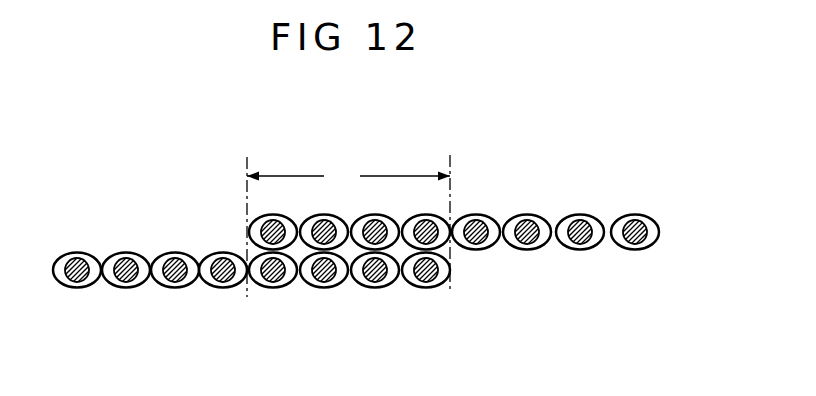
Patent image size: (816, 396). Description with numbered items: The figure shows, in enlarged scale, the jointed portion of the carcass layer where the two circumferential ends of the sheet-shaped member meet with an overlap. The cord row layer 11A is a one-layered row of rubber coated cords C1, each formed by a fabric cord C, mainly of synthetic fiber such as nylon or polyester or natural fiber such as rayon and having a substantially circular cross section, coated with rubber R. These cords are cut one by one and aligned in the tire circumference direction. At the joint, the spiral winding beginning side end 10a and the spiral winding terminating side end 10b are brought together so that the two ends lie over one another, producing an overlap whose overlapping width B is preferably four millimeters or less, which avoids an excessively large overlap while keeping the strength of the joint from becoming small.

The cord row layer 11A is at (399, 241).
The spiral winding beginning side end 10a is at (432, 290).
The spiral winding terminating side end 10b is at (265, 208).
The rubber coated cord C1 is at (627, 157).
The fabric cord C is at (118, 266).
The rubber R is at (168, 257).
The overlapping width B is at (348, 176).